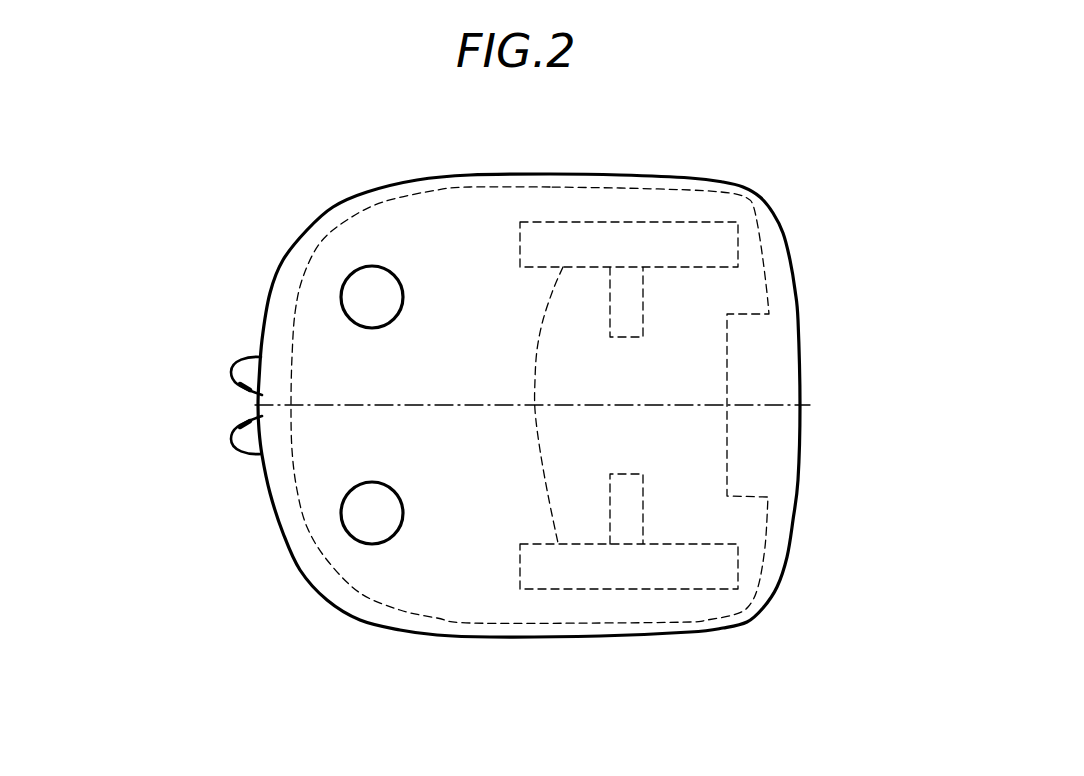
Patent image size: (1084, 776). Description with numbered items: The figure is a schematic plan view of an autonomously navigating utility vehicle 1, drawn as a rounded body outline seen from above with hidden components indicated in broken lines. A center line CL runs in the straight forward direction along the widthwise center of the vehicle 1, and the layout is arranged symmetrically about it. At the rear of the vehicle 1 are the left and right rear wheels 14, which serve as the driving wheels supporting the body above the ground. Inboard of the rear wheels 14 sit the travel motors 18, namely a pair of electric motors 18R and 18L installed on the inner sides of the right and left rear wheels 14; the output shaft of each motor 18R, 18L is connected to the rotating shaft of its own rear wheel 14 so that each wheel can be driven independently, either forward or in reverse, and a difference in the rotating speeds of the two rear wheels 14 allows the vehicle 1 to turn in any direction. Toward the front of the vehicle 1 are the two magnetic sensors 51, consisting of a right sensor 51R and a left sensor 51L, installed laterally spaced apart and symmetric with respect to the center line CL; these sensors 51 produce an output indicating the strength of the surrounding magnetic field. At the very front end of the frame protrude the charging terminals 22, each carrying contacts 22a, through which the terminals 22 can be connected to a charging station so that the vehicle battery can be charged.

The autonomously navigating utility vehicle 1 is at (738, 173).
The rear wheels 14 is at (542, 405).
The travel motors 18 is at (629, 405).
The right travel motor 18R is at (625, 337).
The left travel motor 18L is at (630, 474).
The charging terminals 22 is at (231, 370).
The contacts 22a is at (240, 424).
The magnetic sensors 51 is at (357, 405).
The right magnetic sensor 51R is at (372, 328).
The left magnetic sensor 51L is at (372, 482).
The center line CL is at (548, 406).